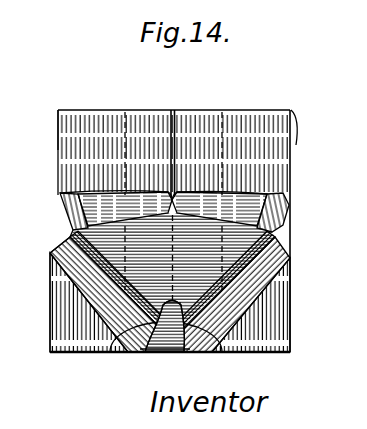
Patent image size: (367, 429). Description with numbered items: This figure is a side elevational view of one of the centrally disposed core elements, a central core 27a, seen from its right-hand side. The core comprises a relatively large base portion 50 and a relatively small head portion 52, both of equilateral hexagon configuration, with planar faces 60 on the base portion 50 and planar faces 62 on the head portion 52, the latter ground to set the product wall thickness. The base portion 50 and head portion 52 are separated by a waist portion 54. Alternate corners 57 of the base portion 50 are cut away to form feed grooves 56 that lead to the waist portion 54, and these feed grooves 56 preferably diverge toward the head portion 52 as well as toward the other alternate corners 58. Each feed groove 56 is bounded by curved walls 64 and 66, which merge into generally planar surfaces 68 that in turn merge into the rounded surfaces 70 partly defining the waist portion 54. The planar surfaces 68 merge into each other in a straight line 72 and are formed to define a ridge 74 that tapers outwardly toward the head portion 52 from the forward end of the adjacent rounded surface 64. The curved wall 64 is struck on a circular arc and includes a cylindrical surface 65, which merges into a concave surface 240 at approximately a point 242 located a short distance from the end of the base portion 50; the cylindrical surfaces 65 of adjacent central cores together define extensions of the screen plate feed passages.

The central core 27a is at (75, 100).
The planar faces of head portion 62 is at (104, 118).
The head portion 52 is at (232, 122).
The alternate corners 57 is at (175, 140).
The other alternate corners 58 is at (291, 110).
The rounded surfaces 70 is at (105, 195).
The waist portion 54 is at (272, 220).
The planar surfaces 68 is at (245, 242).
The curved wall 66 is at (78, 277).
The planar faces of base portion 60 is at (277, 331).
The base portion 50 is at (63, 325).
The ridge 74 is at (168, 236).
The straight line 72 is at (186, 262).
The concave surface 240 is at (188, 293).
The curved wall 64 is at (192, 353).
The cylindrical surface 65 is at (234, 353).
The point 242 is at (113, 355).
The feed groove 56 is at (160, 355).